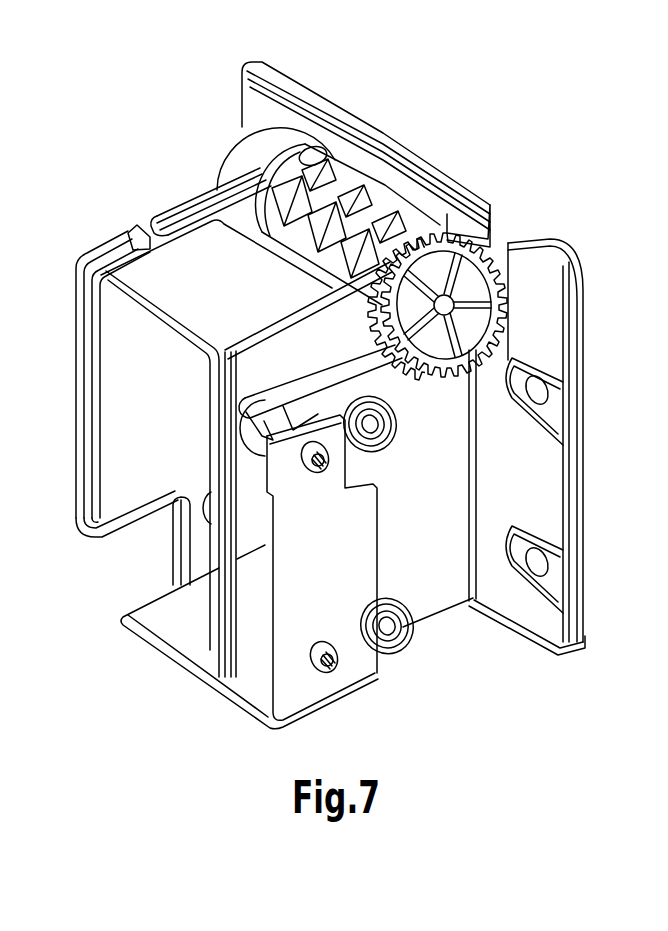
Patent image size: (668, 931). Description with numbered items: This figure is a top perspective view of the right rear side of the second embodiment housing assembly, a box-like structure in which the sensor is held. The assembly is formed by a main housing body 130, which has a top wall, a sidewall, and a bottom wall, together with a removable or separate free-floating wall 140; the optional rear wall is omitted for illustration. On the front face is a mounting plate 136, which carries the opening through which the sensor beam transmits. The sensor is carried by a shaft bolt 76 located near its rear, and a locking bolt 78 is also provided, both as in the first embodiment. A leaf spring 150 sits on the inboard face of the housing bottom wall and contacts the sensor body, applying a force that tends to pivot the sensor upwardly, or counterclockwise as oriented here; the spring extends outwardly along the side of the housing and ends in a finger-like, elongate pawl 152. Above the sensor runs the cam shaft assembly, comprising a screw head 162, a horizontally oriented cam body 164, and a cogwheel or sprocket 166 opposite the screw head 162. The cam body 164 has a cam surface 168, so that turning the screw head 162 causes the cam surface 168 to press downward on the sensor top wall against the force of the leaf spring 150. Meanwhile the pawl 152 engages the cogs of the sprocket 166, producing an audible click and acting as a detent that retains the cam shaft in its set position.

The shaft bolt 76 is at (392, 628).
The locking bolt 78 is at (377, 427).
The main housing body 130 is at (228, 443).
The mounting plate 136 is at (578, 535).
The free-floating wall 140 is at (82, 367).
The leaf spring 150 is at (187, 627).
The pawl 152 is at (385, 360).
The screw head 162 is at (290, 168).
The cam body 164 is at (335, 193).
The sprocket 166 is at (503, 280).
The cam surface 168 is at (495, 240).